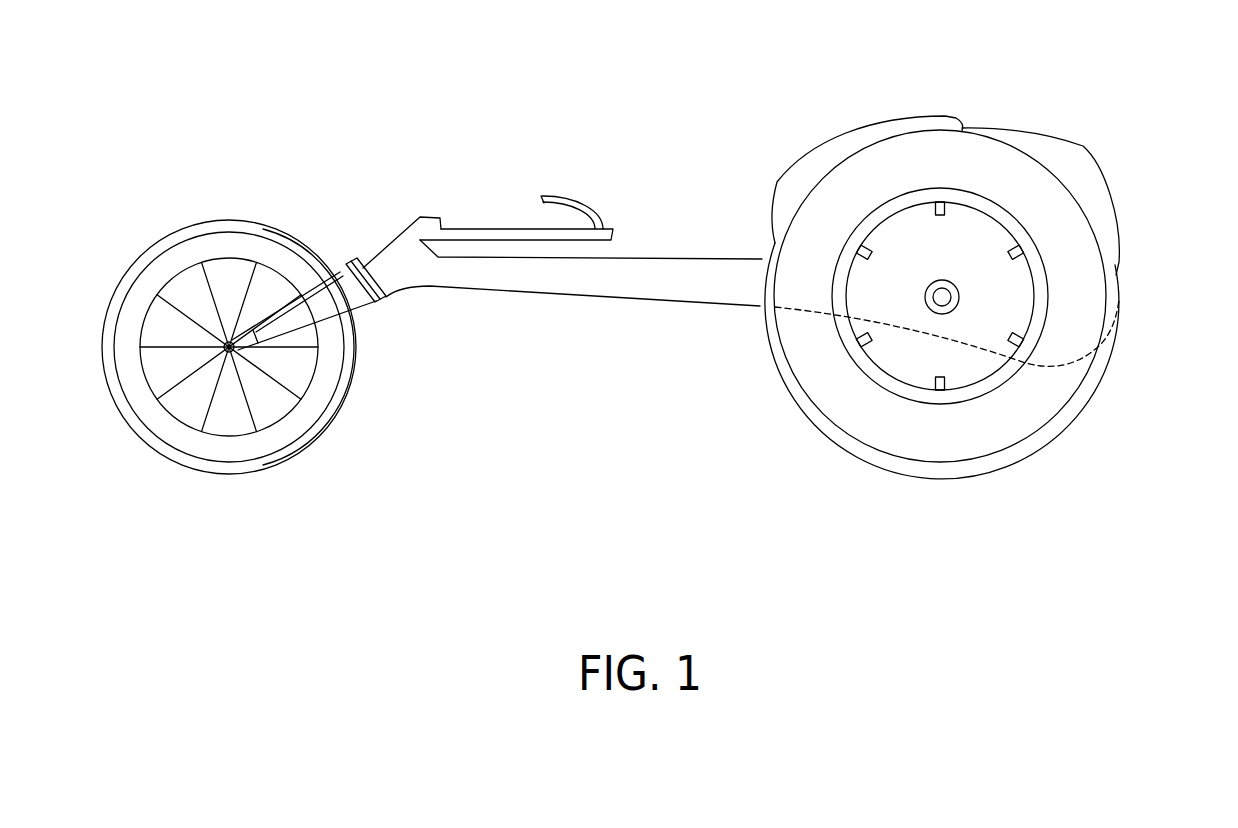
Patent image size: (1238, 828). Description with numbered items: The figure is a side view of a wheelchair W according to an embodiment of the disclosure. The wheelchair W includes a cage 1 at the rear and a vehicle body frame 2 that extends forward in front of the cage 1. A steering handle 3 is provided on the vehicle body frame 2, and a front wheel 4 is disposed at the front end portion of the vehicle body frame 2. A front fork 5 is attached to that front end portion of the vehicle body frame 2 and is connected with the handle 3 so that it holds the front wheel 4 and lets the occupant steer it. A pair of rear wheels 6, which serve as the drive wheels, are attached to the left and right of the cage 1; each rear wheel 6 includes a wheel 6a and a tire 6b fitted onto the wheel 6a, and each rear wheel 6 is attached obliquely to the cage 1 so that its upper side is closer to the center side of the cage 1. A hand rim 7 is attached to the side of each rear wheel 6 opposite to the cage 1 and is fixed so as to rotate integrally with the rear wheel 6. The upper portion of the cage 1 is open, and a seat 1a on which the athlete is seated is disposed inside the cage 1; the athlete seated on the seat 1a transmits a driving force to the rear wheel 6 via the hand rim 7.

The wheelchair W is at (1134, 82).
The cage 1 is at (1085, 146).
The seat 1a is at (1092, 262).
The vehicle body frame 2 is at (660, 257).
The steering handle 3 is at (492, 228).
The front wheel 4 is at (148, 246).
The front fork 5 is at (297, 322).
The rear wheel 6 is at (1037, 175).
The wheel 6a is at (1013, 430).
The tire 6b is at (997, 457).
The hand rim 7 is at (957, 190).